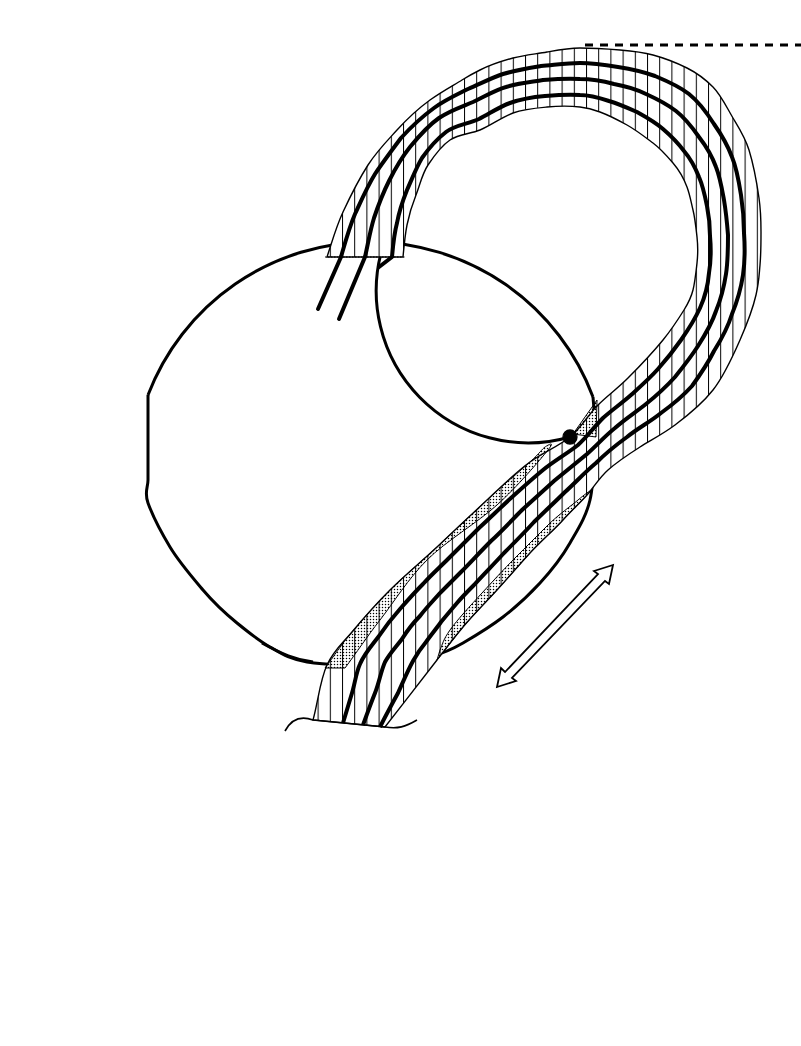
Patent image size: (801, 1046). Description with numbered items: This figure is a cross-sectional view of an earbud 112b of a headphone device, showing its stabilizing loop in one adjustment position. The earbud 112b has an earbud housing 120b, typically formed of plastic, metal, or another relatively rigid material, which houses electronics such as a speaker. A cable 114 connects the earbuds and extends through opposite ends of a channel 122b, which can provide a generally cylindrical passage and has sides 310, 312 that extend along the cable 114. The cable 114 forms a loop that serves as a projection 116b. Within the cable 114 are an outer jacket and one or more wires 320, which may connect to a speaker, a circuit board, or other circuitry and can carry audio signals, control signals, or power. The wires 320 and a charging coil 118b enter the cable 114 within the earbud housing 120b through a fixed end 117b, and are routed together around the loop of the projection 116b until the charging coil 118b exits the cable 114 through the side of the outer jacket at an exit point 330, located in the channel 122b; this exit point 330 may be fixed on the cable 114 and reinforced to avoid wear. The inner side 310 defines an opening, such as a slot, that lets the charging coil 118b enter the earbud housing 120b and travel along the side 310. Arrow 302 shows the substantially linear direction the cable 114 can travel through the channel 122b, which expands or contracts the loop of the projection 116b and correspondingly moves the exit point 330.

The earbud 112b is at (158, 186).
The cable 114 is at (410, 690).
The projection 116b is at (490, 82).
The fixed end 117b is at (331, 240).
The charging coil 118b is at (268, 457).
The earbud housing 120b is at (250, 278).
The channel 122b is at (335, 652).
The arrow 302 is at (572, 620).
The inner side 310 is at (397, 580).
The side 312 is at (557, 542).
The wires 320 is at (340, 321).
The exit point 330 is at (565, 430).